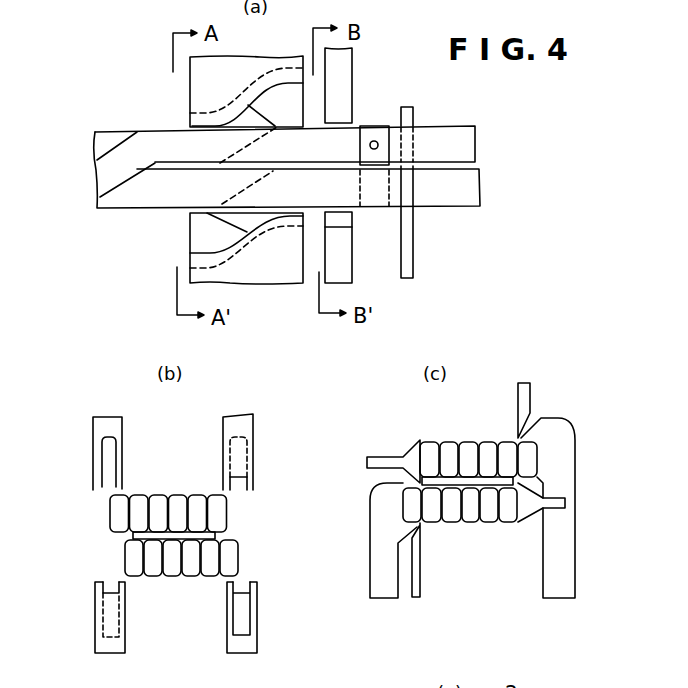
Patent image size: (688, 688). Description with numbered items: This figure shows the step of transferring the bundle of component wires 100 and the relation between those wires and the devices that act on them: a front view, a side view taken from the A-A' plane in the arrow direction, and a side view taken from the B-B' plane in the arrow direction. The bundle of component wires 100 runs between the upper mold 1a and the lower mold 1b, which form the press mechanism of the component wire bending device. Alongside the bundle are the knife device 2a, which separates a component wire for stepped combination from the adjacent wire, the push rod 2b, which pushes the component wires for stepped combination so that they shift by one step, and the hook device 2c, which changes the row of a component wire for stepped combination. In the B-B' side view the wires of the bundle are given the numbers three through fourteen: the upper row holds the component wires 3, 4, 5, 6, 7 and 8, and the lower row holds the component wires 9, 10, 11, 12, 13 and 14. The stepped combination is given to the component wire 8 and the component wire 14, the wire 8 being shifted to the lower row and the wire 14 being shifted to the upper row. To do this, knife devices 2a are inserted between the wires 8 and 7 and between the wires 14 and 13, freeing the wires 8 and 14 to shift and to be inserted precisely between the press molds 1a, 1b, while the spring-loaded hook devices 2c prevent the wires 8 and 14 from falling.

The component wires 100 is at (457, 147).
The upper mold 1a is at (198, 90).
The lower mold 1b is at (198, 262).
The knife device 2a is at (352, 63).
The push rod 2b is at (368, 126).
The hook device 2c is at (412, 115).
The component wire 3 is at (429, 459).
The component wire 4 is at (449, 459).
The component wire 5 is at (468, 459).
The component wire 6 is at (488, 459).
The component wire 7 is at (507, 459).
The component wire 8 is at (606, 475).
The component wire 9 is at (508, 505).
The component wire 10 is at (489, 505).
The component wire 11 is at (470, 505).
The component wire 12 is at (451, 505).
The component wire 13 is at (431, 505).
The component wire 14 is at (348, 522).